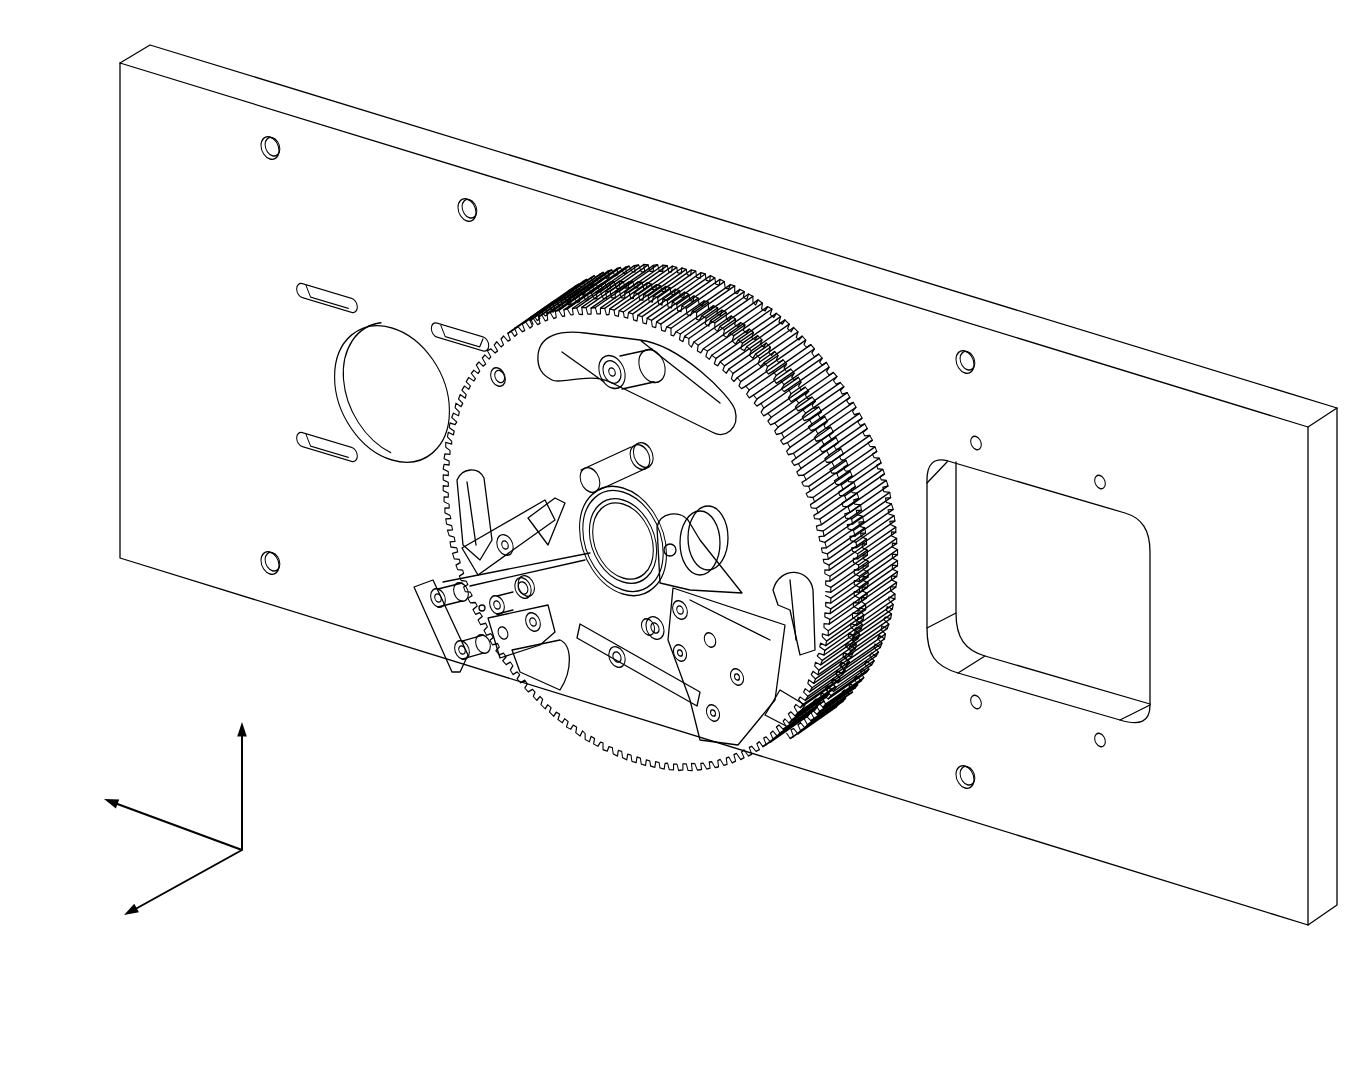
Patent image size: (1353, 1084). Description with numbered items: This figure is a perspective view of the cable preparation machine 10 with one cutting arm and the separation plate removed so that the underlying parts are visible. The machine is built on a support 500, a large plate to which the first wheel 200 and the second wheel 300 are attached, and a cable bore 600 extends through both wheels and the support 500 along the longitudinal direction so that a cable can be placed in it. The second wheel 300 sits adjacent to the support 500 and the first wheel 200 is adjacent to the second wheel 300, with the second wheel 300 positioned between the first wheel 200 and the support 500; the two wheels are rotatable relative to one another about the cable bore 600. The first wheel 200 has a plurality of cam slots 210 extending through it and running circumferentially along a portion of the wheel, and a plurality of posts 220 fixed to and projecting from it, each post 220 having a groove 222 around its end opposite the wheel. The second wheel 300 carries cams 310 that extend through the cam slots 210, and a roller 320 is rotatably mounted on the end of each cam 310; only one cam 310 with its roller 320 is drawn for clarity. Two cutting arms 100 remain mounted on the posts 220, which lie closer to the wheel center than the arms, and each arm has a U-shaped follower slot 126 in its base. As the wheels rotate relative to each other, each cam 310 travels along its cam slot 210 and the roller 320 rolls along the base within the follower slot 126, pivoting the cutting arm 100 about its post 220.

The cable preparation machine 10 is at (1082, 152).
The cutting arm 100 is at (410, 632).
The follower slot 126 is at (803, 715).
The first wheel 200 is at (548, 335).
The cam slot 210 is at (775, 328).
The post 220 is at (612, 470).
The groove 222 is at (583, 478).
The second wheel 300 is at (735, 312).
The cam 310 is at (683, 325).
The roller 320 is at (612, 358).
The support 500 is at (358, 176).
The cable bore 600 is at (613, 520).